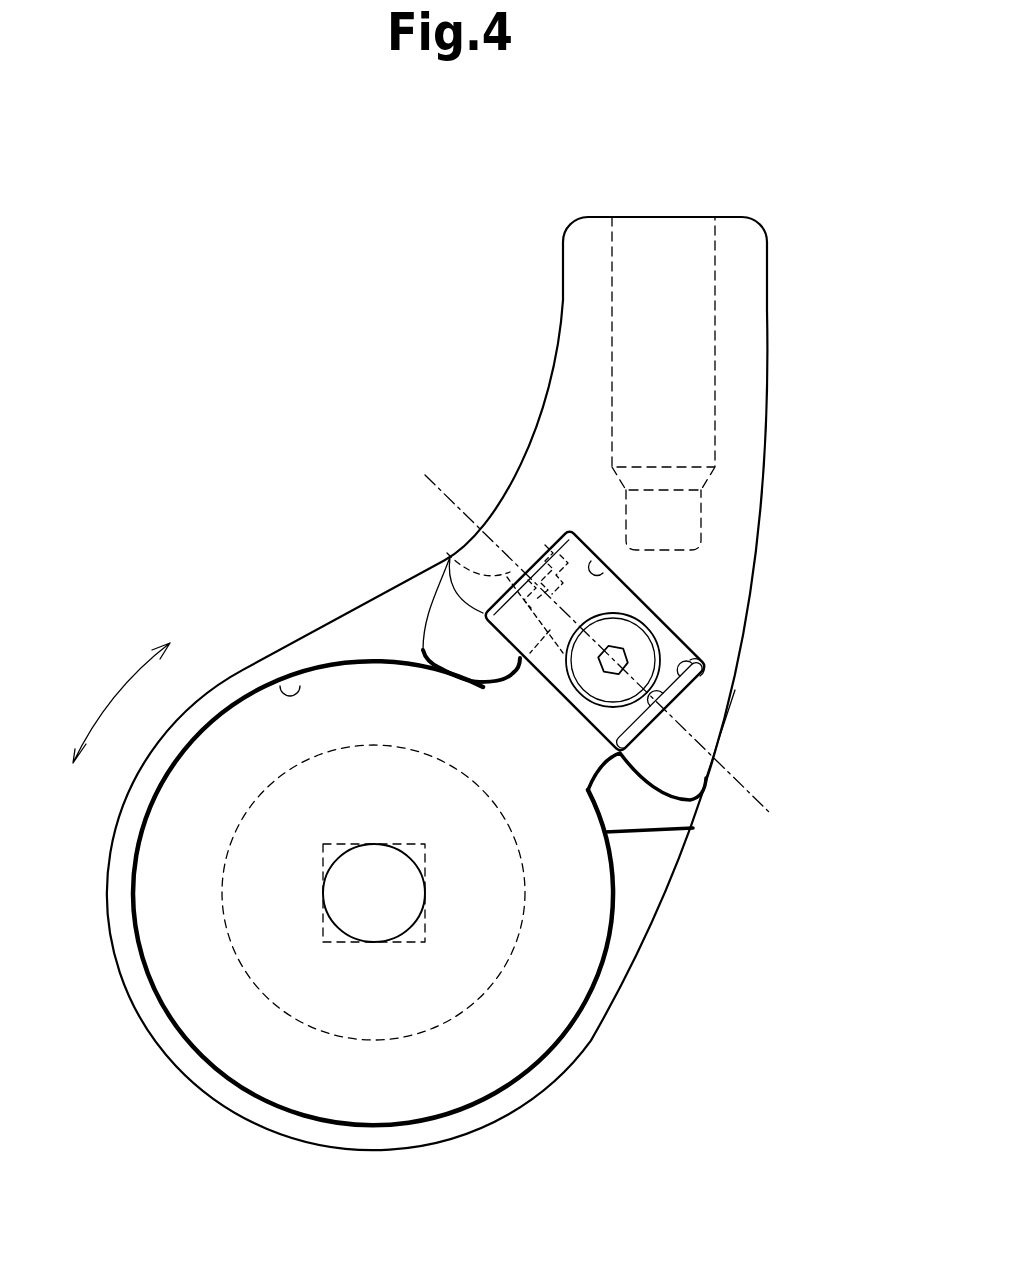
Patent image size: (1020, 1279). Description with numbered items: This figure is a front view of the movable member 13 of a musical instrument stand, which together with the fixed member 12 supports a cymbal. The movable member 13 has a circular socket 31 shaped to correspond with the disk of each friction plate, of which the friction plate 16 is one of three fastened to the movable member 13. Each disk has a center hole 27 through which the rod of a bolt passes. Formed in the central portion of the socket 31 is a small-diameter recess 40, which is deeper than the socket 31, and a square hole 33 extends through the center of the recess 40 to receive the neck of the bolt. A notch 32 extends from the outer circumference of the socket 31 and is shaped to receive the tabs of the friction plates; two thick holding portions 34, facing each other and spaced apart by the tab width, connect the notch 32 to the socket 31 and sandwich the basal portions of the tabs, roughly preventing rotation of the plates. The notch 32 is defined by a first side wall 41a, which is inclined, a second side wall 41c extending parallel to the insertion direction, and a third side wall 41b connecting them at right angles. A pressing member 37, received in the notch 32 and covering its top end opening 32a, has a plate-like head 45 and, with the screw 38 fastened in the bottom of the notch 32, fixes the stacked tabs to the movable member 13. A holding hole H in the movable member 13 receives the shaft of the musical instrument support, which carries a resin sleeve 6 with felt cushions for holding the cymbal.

The fixed member 12 is at (350, 405).
The movable member 13 is at (770, 425).
The holding hole H is at (717, 343).
The friction plate 16 is at (517, 1047).
The small-diameter recess 40 is at (512, 960).
The center hole 27 is at (332, 876).
The square hole 33 is at (343, 945).
The socket 31 is at (290, 686).
The holding portions 34 is at (443, 627).
The notch 32 is at (602, 663).
The top end opening 32a is at (680, 703).
The pressing member 37 is at (625, 724).
The head 45 is at (540, 577).
The first side wall 41a is at (447, 553).
The third side wall 41b is at (603, 566).
The second side wall 41c is at (712, 667).
The screw 38 is at (580, 683).
The resin sleeve 6 is at (784, 792).